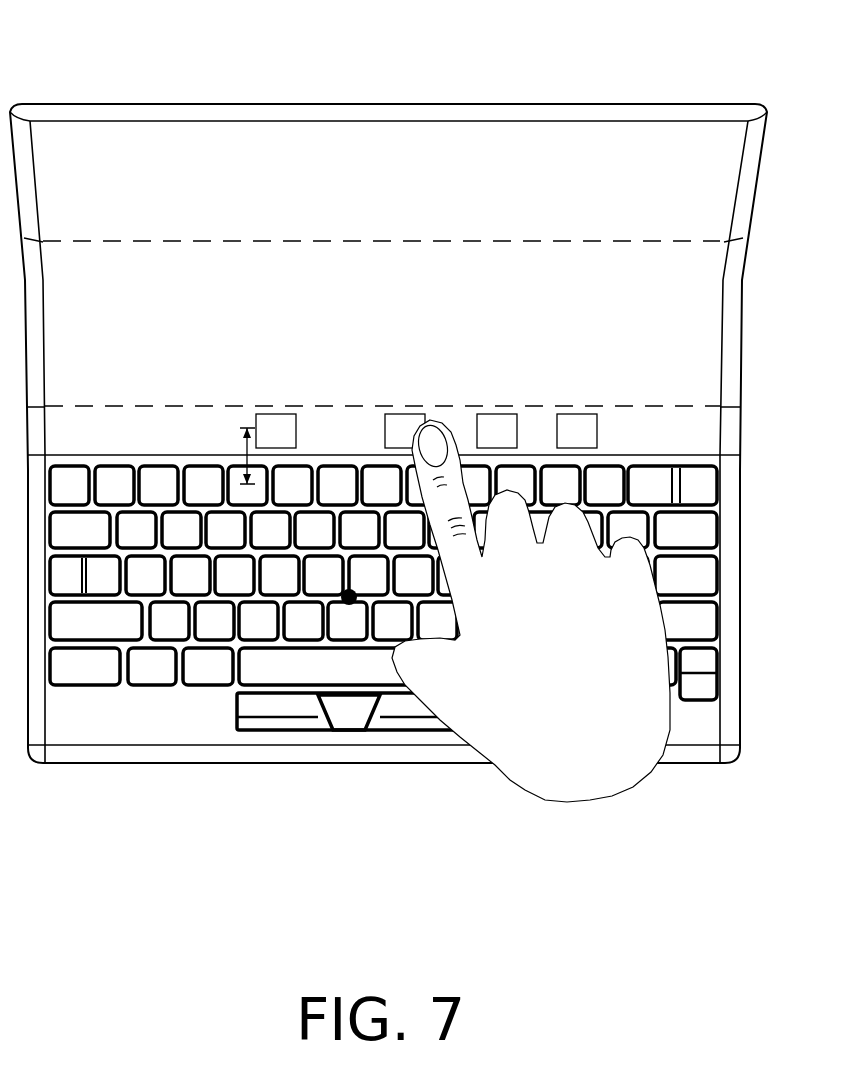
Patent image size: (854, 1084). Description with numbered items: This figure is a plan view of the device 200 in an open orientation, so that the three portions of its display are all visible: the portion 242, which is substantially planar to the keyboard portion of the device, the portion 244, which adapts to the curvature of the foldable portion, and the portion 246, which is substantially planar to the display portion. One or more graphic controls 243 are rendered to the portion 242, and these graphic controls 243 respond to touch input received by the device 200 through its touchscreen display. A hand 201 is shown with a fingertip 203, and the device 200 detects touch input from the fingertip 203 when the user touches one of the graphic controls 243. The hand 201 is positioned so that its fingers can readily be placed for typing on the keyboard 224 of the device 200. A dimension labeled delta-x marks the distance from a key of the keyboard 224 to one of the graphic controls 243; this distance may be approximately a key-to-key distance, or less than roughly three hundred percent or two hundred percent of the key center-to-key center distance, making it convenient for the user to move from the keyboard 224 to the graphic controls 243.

The device 200 is at (163, 39).
The portion of the display 246 is at (381, 213).
The portion of the display 244 is at (382, 366).
The portion of the display 242 is at (348, 449).
The graphic controls 243 is at (393, 432).
The fingertip 203 is at (413, 412).
The keyboard 224 is at (108, 722).
The hand 201 is at (494, 802).